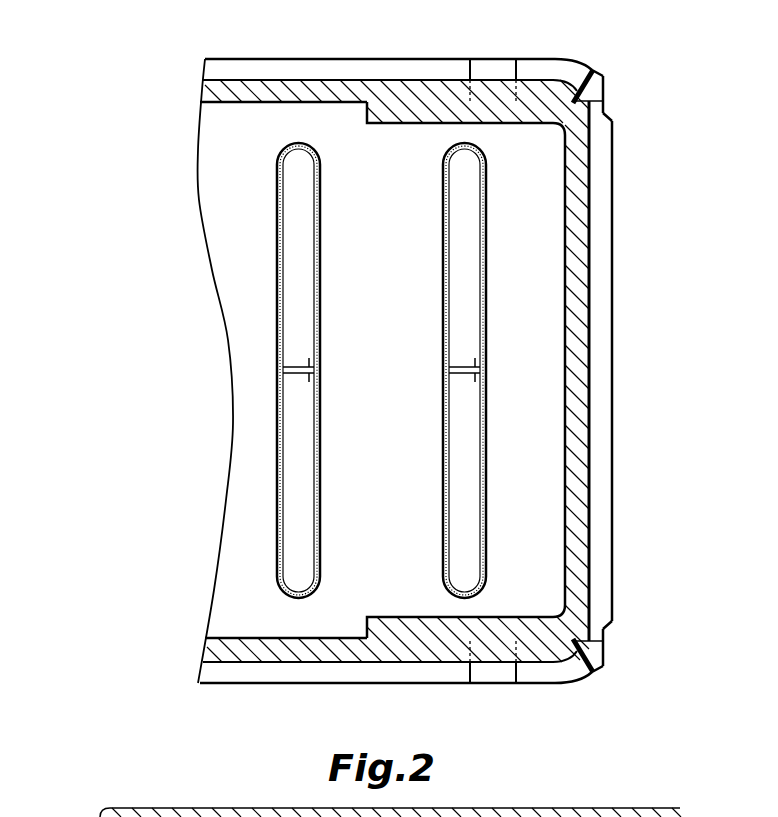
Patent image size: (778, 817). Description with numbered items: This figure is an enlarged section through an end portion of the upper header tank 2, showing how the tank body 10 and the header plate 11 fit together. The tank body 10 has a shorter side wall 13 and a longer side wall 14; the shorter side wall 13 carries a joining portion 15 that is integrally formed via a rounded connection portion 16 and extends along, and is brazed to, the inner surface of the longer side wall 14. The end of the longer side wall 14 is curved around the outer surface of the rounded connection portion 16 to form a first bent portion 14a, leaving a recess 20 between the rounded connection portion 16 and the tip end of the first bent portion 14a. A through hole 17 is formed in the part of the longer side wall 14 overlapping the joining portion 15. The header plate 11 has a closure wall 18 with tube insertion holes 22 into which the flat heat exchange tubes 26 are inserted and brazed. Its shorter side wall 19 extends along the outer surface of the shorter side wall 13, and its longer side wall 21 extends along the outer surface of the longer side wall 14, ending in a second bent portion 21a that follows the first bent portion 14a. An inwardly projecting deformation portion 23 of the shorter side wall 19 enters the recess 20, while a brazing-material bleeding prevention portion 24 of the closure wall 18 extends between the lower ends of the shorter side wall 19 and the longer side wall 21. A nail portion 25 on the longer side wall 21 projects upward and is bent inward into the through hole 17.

The upper header tank 2 is at (650, 285).
The tank body 10 is at (580, 433).
The header plate 11 is at (602, 383).
The shorter side wall 13 is at (580, 538).
The longer side wall 14 is at (216, 95).
The first bent portion 14a is at (555, 80).
The joining portion 15 is at (422, 116).
The rounded connection portion 16 is at (566, 120).
The through hole 17 is at (466, 75).
The closure wall 18 is at (230, 272).
The shorter side wall 19 is at (604, 206).
The recess 20 is at (599, 90).
The longer side wall 21 is at (270, 70).
The second bent portion 21a is at (589, 68).
The tube insertion hole 22 is at (285, 212).
The deformation portion 23 is at (606, 108).
The brazing-material bleeding prevention portion 24 is at (604, 73).
The nail portion 25 is at (483, 62).
The heat exchange tube 26 is at (278, 457).